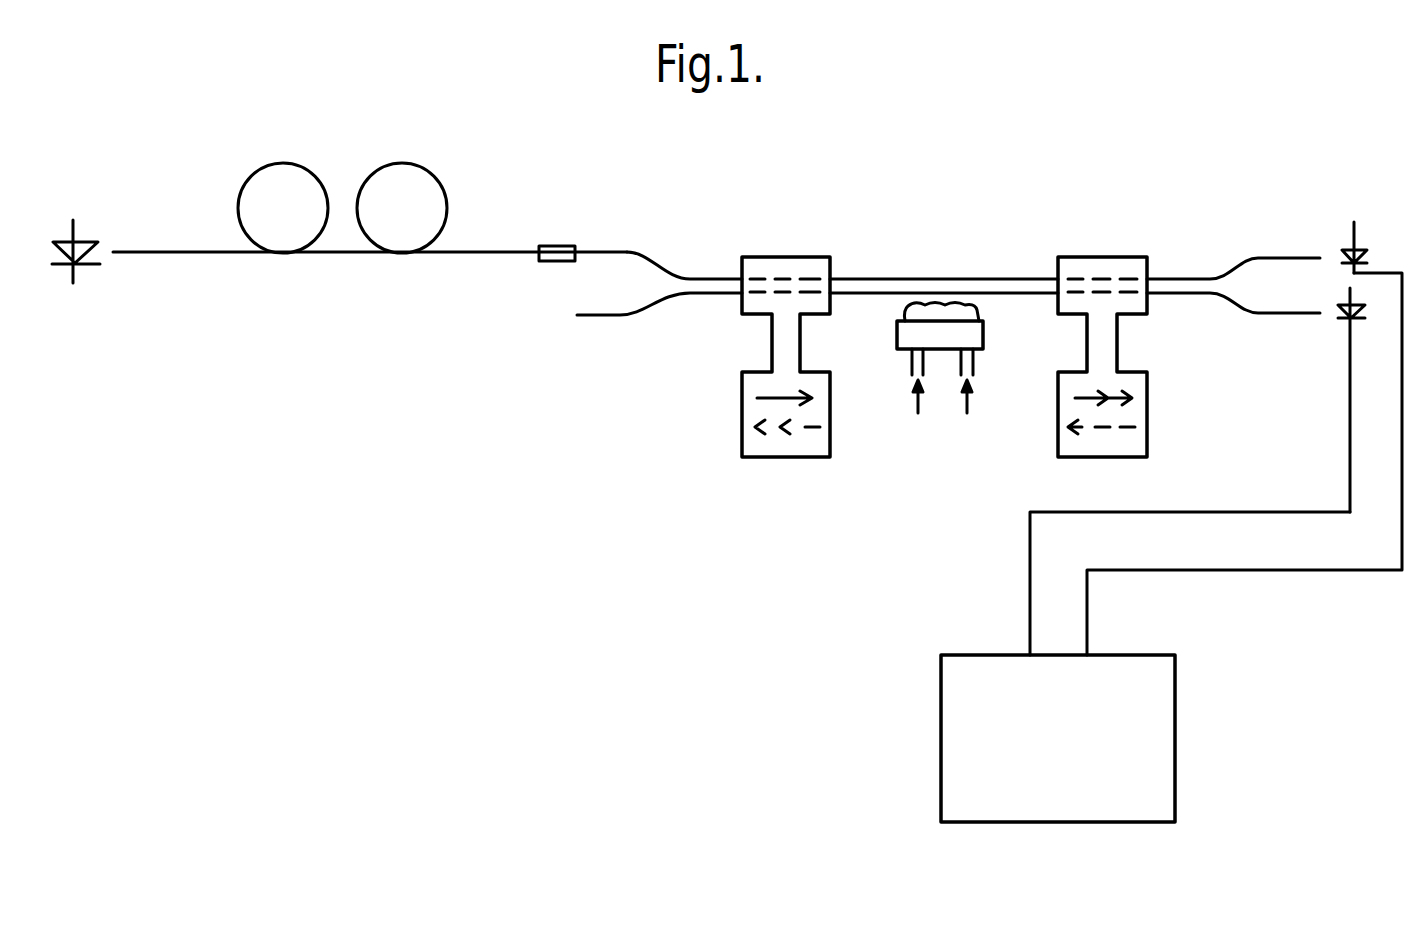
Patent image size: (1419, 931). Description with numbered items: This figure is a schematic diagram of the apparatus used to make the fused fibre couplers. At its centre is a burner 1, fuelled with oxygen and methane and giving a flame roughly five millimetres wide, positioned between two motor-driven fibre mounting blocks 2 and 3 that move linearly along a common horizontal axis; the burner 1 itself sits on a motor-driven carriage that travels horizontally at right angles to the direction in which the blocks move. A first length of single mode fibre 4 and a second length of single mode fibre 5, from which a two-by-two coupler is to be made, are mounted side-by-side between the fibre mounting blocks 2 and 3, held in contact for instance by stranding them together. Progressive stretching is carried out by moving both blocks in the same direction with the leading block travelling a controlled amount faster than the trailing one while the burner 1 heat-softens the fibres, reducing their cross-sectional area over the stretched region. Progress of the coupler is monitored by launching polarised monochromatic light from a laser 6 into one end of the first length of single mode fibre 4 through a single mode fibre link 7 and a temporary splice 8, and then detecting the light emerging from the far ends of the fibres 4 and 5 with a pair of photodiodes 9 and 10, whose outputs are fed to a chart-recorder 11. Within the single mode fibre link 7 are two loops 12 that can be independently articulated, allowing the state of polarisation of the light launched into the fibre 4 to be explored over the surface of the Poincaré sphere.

The burner 1 is at (983, 336).
The fibre mounting block 2 is at (786, 262).
The fibre mounting block 3 is at (1092, 262).
The first length of single mode fibre 4 is at (688, 278).
The second length of single mode fibre 5 is at (703, 293).
The laser 6 is at (88, 244).
The single mode fibre link 7 is at (483, 252).
The temporary splice 8 is at (562, 246).
The photodiode 9 is at (1368, 250).
The photodiode 10 is at (1340, 306).
The chart-recorder 11 is at (1068, 737).
The loops 12 is at (268, 177).